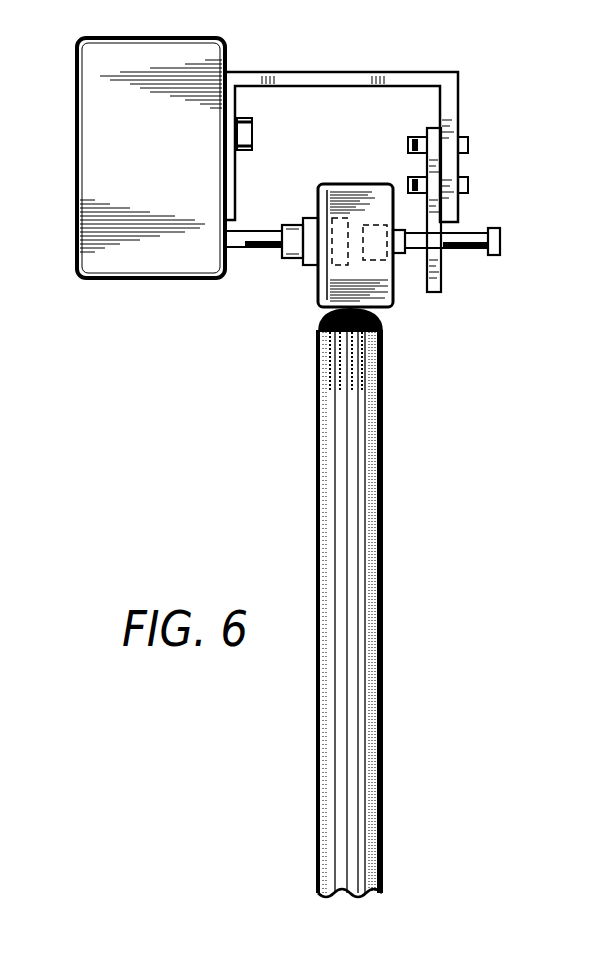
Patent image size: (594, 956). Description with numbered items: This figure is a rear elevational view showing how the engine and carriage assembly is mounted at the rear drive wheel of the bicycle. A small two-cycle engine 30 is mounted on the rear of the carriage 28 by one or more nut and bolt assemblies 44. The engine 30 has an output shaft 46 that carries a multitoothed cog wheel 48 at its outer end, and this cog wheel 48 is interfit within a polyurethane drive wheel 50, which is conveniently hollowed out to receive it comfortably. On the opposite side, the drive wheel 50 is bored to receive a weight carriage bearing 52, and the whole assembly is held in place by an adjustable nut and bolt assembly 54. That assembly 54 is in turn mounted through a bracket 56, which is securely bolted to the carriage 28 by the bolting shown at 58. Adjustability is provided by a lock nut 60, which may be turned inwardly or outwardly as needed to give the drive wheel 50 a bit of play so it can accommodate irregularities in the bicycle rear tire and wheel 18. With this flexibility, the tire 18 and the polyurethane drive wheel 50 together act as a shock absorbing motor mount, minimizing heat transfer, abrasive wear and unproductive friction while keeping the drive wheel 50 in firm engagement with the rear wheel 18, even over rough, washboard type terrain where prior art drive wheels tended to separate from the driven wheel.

The rear tire and wheel 18 is at (385, 590).
The carriage 28 is at (440, 36).
The engine 30 is at (160, 170).
The nut and bolt assembly 44 is at (252, 128).
The output shaft 46 is at (246, 250).
The multitoothed cog wheel 48 is at (325, 186).
The polyurethane drive wheel 50 is at (330, 257).
The weight carriage bearing 52 is at (378, 235).
The adjustable nut and bolt assembly 54 is at (500, 240).
The bracket 56 is at (441, 290).
The bolts 58 is at (468, 147).
The lock nut 60 is at (400, 256).